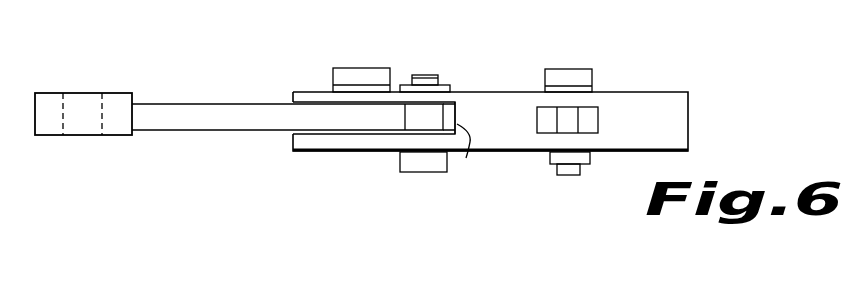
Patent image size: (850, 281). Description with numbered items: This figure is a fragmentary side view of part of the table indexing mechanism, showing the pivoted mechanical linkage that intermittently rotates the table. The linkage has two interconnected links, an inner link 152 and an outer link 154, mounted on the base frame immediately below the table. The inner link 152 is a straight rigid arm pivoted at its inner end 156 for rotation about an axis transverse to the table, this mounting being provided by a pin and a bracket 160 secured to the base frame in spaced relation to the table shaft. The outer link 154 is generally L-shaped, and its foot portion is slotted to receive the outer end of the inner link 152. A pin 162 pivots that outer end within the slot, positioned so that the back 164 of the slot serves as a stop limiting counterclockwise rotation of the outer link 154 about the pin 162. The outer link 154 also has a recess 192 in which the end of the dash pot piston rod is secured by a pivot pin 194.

The inner link 152 is at (233, 103).
The outer link 154 is at (525, 155).
The inner end 156 is at (107, 93).
The bracket 160 is at (468, 155).
The pin 162 is at (444, 57).
The back of the slot 164 is at (453, 116).
The recess 192 is at (600, 117).
The pivot pin 194 is at (605, 192).